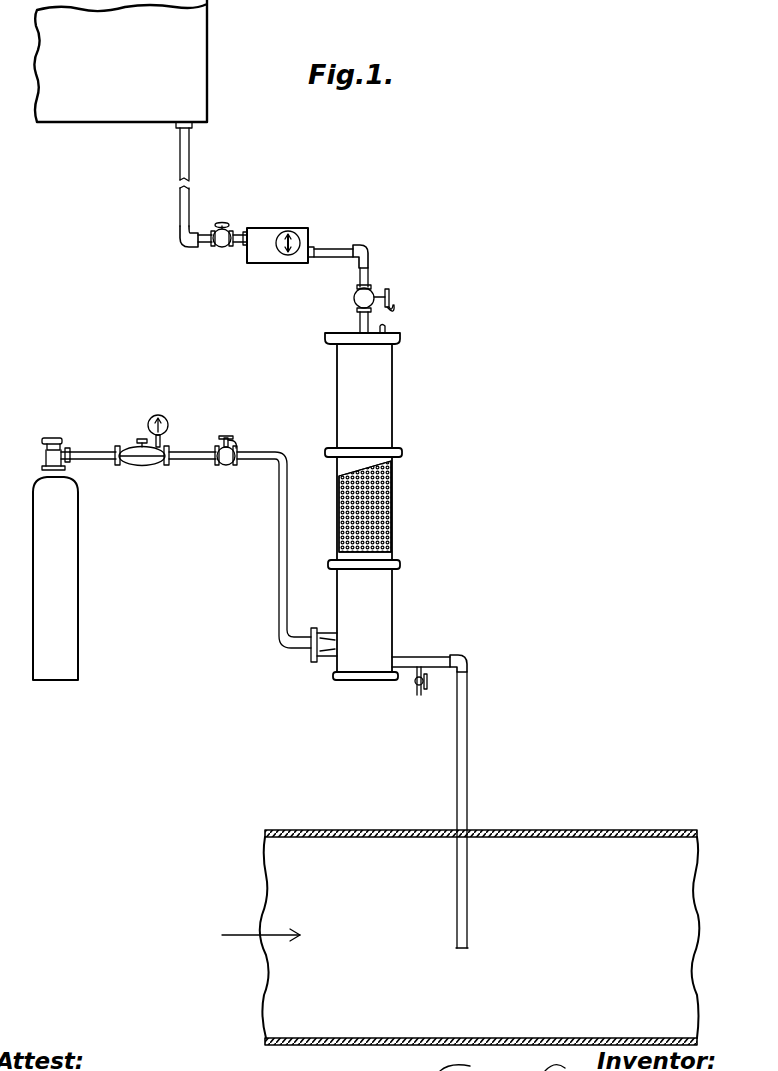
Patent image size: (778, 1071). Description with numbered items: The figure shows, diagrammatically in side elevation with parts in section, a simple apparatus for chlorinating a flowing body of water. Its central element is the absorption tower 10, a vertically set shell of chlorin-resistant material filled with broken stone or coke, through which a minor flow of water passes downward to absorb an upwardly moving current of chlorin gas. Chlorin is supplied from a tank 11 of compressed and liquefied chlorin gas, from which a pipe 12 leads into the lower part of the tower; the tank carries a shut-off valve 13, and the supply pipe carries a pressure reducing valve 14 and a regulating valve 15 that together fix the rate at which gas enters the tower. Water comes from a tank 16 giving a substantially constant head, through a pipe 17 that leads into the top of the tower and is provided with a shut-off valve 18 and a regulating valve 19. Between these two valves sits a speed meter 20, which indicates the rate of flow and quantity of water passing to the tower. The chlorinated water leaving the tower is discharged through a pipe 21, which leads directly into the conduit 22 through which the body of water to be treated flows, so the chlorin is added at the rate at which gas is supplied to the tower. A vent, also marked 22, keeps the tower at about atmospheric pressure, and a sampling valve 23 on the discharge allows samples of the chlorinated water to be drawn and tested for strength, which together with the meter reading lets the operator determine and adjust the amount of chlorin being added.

The absorption tower 10 is at (380, 402).
The tank 11 is at (65, 571).
The pipe 12 is at (255, 452).
The shut-off valve 13 is at (63, 447).
The pressure reducing valve 14 is at (143, 466).
The regulating valve 15 is at (223, 466).
The tank 16 is at (190, 73).
The pipe 17 is at (369, 272).
The shut-off valve 18 is at (222, 249).
The regulating valve 19 is at (355, 298).
The speed meter 20 is at (270, 236).
The pipe 21 is at (464, 723).
The conduit 22 is at (388, 328).
The sampling valve 23 is at (417, 690).